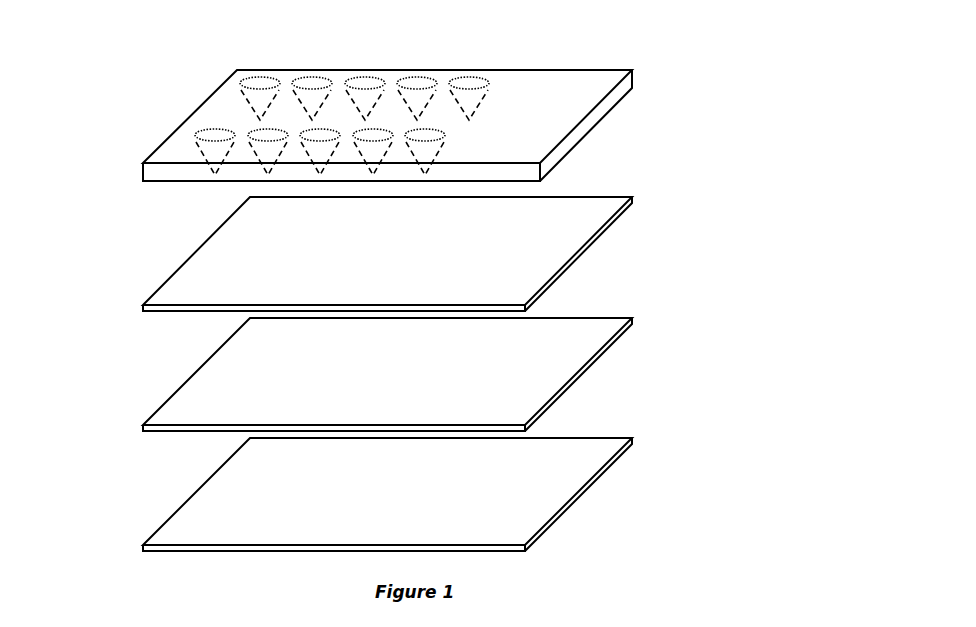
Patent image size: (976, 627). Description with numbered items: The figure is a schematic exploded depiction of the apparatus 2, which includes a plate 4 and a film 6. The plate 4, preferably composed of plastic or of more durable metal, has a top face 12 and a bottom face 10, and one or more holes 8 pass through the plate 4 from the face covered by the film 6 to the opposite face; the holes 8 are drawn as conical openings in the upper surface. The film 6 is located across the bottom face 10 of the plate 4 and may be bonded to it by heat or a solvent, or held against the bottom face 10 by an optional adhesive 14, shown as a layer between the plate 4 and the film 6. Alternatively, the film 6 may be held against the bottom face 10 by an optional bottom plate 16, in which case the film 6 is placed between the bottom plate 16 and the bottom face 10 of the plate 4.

The apparatus 2 is at (430, 296).
The plate 4 is at (423, 96).
The film 6 is at (580, 378).
The holes 8 is at (480, 73).
The bottom face 10 is at (583, 143).
The top face 12 is at (228, 115).
The adhesive 14 is at (587, 250).
The bottom plate 16 is at (572, 512).